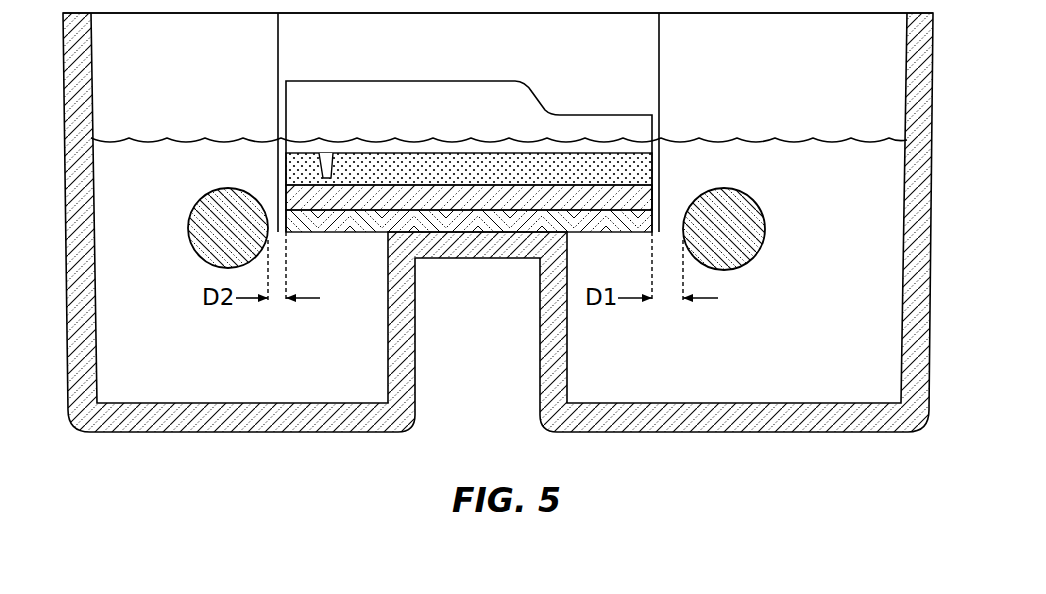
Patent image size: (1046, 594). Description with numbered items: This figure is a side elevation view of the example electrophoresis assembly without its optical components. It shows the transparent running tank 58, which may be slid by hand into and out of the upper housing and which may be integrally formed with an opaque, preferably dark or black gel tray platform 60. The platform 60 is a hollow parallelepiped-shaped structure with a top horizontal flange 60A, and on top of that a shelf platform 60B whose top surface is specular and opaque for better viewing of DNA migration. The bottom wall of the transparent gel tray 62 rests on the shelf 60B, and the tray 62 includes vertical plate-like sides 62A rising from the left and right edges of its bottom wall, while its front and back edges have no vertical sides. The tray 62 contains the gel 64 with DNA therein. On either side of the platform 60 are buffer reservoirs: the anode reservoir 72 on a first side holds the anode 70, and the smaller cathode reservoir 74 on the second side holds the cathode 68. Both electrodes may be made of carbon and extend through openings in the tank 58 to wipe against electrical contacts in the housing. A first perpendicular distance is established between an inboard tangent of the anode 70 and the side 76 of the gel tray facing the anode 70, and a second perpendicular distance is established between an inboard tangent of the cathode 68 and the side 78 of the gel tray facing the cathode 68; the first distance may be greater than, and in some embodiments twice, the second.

The running tank 58 is at (228, 432).
The gel tray platform 60 is at (546, 323).
The top horizontal flange 60A is at (477, 250).
The shelf platform 60B is at (352, 228).
The gel tray 62 is at (615, 196).
The vertical plate-like sides 62A is at (601, 130).
The gel 64 is at (352, 160).
The cathode 68 is at (206, 194).
The anode 70 is at (747, 195).
The anode reservoir 72 is at (842, 353).
The cathode reservoir 74 is at (293, 353).
The side of the gel tray facing the anode 76 is at (653, 198).
The side of the gel tray facing the cathode 78 is at (284, 201).